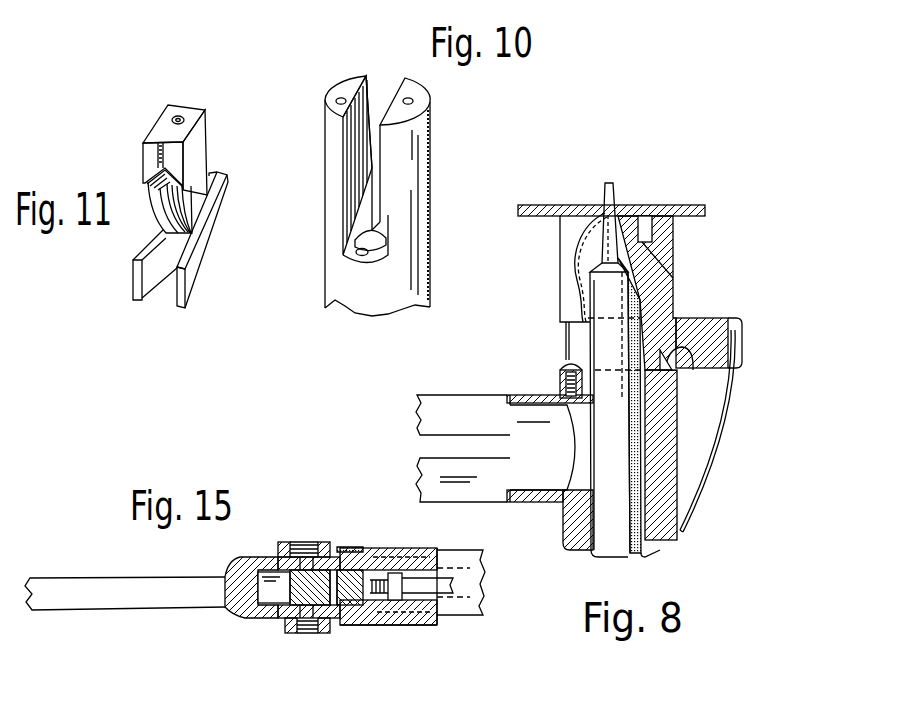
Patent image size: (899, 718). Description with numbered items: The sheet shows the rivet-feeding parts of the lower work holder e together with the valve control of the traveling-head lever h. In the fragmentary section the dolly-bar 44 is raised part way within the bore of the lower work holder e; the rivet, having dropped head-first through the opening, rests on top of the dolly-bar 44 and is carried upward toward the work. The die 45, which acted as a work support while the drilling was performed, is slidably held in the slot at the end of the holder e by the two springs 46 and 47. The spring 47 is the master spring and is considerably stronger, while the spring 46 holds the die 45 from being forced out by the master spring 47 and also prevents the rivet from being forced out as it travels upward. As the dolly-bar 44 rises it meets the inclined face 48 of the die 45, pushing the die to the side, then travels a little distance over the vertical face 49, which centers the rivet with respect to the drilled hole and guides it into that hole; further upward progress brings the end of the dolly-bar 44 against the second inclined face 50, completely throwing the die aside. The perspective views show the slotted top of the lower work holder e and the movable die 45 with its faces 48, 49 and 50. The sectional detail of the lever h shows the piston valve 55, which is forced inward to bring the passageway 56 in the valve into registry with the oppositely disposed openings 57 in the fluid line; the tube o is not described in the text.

In FIG. 8, the dolly-bar 44 is at (647, 556).
In FIG. 11, the die 45 is at (205, 223).
In FIG. 8, the die 45 is at (706, 318).
In FIG. 8, the spring 46 is at (577, 266).
In FIG. 8, the master spring 47 is at (718, 462).
In FIG. 11, the inclined face 48 is at (185, 230).
In FIG. 8, the inclined face 48 is at (693, 372).
In FIG. 11, the vertical face 49 is at (188, 208).
In FIG. 8, the vertical face 49 is at (638, 295).
In FIG. 11, the second inclined face 50 is at (160, 190).
In FIG. 8, the second inclined face 50 is at (643, 243).
In FIG. 15, the piston valve 55 is at (276, 568).
In FIG. 15, the passageway 56 is at (337, 604).
In FIG. 15, the openings 57 is at (310, 545).
In FIG. 10, the lower work holder e is at (430, 173).
In FIG. 8, the lower work holder e is at (562, 303).
In FIG. 15, the lever h is at (418, 626).
In FIG. 15, the tube o is at (470, 562).